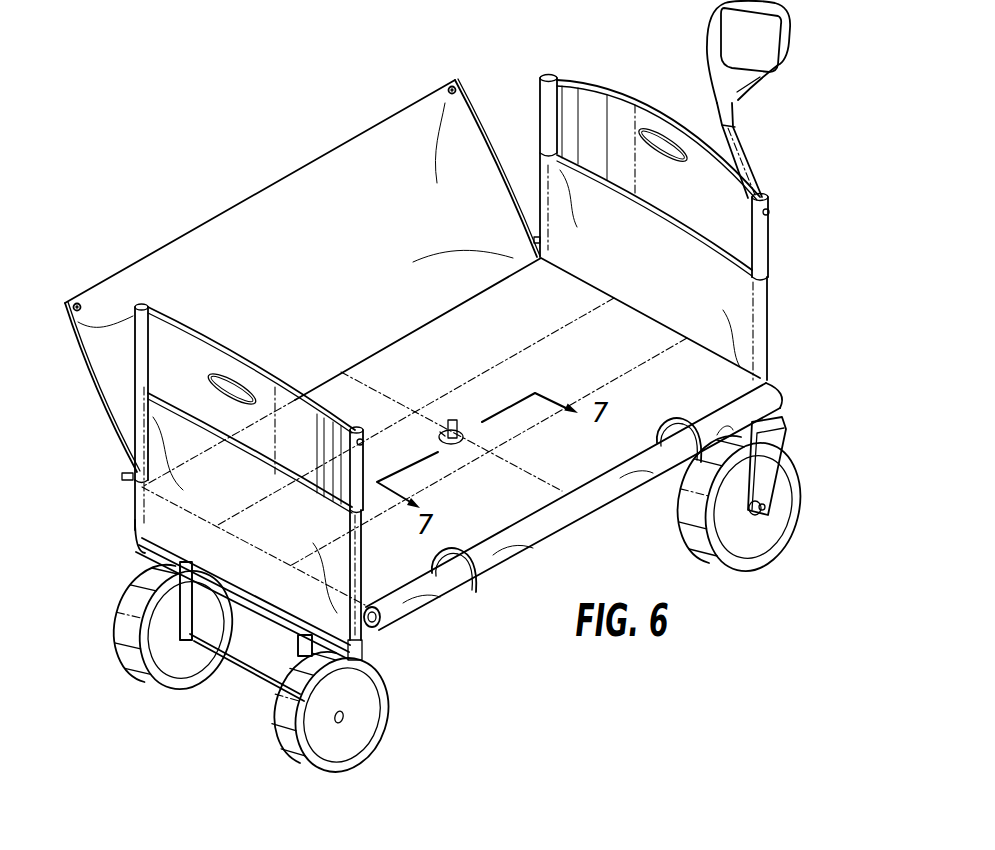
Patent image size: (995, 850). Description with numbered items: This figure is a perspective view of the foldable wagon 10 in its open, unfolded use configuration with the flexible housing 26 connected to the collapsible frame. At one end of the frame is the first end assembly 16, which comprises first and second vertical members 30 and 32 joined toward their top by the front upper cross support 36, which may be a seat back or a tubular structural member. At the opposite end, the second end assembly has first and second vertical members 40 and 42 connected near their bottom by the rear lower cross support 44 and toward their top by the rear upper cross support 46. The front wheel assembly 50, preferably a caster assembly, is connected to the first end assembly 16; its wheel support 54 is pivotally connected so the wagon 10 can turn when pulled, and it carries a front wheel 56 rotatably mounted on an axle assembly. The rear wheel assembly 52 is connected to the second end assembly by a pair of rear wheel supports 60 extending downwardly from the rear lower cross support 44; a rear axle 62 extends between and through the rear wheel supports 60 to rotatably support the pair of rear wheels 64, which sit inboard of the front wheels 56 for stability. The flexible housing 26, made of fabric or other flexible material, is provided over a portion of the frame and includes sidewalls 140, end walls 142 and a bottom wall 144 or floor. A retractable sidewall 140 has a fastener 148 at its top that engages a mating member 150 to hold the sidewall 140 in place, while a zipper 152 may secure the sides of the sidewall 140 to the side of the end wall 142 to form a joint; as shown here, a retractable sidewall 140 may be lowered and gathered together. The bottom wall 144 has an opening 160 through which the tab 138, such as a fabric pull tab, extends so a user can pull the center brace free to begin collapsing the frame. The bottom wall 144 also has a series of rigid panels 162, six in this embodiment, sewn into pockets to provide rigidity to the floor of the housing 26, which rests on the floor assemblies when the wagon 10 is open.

The foldable wagon 10 is at (182, 202).
The first end assembly 16 is at (620, 97).
The flexible housing 26 is at (307, 150).
The first vertical member 30 is at (549, 73).
The second vertical member 32 is at (758, 196).
The front upper cross support 36 is at (738, 175).
The first vertical member 40 is at (135, 298).
The second vertical member 42 is at (357, 427).
The rear lower cross support 44 is at (152, 543).
The rear upper cross support 46 is at (167, 387).
The front wheel assembly 50 is at (791, 543).
The rear wheel assembly 52 is at (207, 722).
The wheel support 54 is at (768, 427).
The front wheel 56 is at (801, 458).
The rear wheel support 60 is at (303, 650).
The rear axle 62 is at (235, 662).
The rear wheel 64 is at (123, 650).
The tab 138 is at (450, 420).
The sidewall 140 is at (272, 200).
The end wall 142 is at (740, 308).
The bottom wall 144 is at (547, 470).
The fastener 148 is at (462, 80).
The mating member 150 is at (769, 212).
The zipper 152 is at (483, 127).
The opening 160 is at (455, 440).
The rigid panel 162 is at (528, 311).